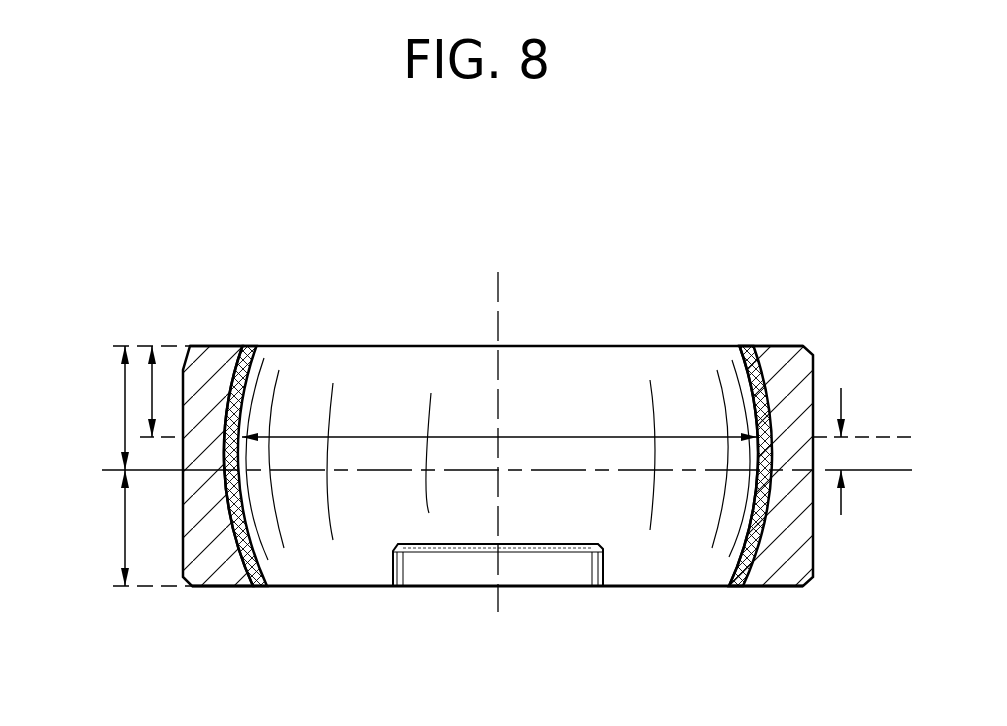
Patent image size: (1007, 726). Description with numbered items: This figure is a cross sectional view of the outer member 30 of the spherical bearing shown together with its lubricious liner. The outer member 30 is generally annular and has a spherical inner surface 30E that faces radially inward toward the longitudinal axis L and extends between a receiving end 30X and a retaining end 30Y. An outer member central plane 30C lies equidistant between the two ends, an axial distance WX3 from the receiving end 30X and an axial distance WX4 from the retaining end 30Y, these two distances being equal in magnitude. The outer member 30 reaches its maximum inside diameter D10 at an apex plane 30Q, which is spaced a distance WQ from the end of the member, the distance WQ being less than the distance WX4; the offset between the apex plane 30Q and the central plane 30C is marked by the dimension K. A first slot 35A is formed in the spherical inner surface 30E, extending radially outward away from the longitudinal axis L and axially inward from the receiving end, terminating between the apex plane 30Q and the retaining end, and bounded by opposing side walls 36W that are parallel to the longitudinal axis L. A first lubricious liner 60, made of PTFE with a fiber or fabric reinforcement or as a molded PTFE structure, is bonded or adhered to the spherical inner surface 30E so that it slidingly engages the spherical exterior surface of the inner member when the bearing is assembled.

The outer member 30 is at (798, 378).
The retaining end 30Y is at (212, 346).
The receiving end 30X is at (222, 587).
The spherical inner surface 30E is at (328, 552).
The apex plane 30Q is at (862, 437).
The outer member central plane 30C is at (867, 470).
The first lubricious liner 60 is at (262, 587).
The first slot 35A is at (463, 576).
The opposing side walls 36W is at (600, 570).
The longitudinal axis L is at (497, 317).
The maximum inside diameter D10 is at (573, 437).
The distance between maximum diameter position and center K is at (842, 505).
The distance WQ is at (170, 344).
The axial distance WX3 is at (125, 522).
The axial distance WX4 is at (125, 385).